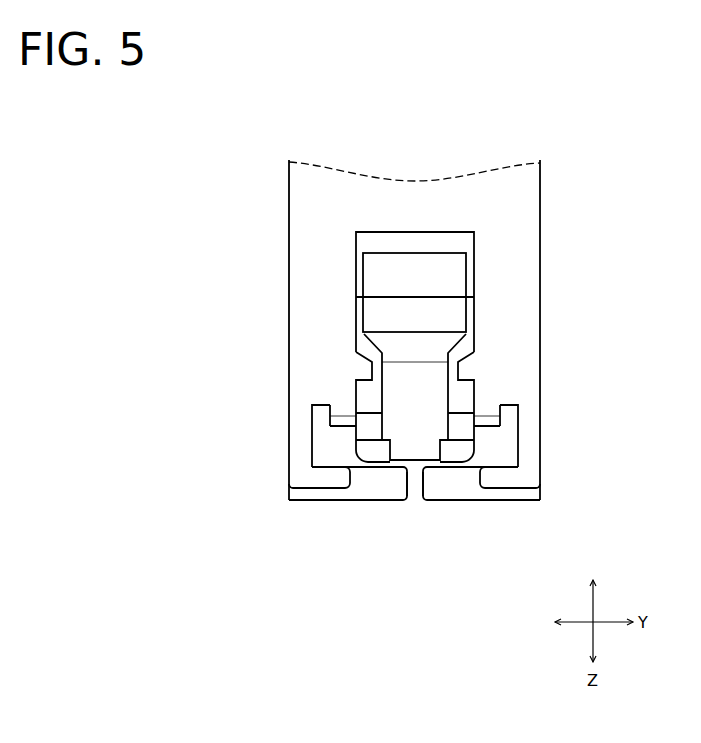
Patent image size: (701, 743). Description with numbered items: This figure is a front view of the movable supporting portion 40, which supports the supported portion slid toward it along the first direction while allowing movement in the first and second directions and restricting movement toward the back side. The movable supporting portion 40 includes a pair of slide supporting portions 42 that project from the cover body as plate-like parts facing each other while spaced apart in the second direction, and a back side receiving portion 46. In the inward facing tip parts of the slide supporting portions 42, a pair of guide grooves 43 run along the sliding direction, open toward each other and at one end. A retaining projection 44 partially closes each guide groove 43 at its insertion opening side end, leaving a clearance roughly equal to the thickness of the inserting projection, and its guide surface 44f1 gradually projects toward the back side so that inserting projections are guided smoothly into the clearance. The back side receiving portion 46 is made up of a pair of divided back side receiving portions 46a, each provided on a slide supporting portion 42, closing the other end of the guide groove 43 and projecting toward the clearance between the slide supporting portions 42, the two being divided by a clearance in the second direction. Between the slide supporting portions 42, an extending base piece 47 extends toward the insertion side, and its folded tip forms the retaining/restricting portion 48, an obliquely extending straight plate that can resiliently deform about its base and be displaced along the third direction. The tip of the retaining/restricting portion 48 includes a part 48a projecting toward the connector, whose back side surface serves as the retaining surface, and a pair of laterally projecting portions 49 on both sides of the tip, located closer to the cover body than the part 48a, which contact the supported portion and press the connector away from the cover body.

The movable supporting portion 40 is at (541, 208).
The slide supporting portion 42 is at (289, 352).
The guide groove 43 is at (317, 436).
The retaining projection 44 is at (312, 416).
The guide surface 44f1 is at (342, 420).
The back side receiving portion 46 is at (479, 498).
The divided back side receiving portion 46a is at (423, 498).
The extending base piece 47 is at (431, 252).
The retaining/restricting portion 48 is at (437, 372).
The part projecting toward the connector 48a is at (398, 450).
The laterally projecting portion 49 is at (358, 443).